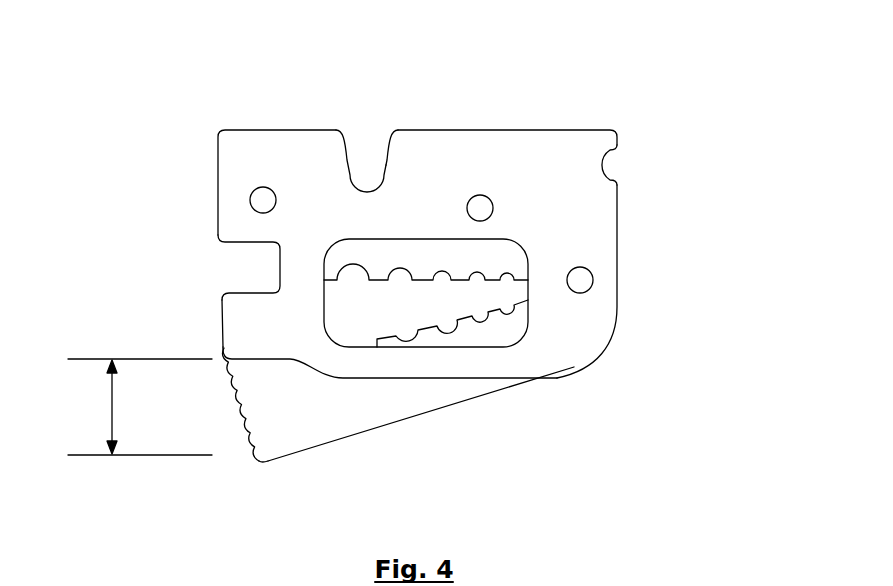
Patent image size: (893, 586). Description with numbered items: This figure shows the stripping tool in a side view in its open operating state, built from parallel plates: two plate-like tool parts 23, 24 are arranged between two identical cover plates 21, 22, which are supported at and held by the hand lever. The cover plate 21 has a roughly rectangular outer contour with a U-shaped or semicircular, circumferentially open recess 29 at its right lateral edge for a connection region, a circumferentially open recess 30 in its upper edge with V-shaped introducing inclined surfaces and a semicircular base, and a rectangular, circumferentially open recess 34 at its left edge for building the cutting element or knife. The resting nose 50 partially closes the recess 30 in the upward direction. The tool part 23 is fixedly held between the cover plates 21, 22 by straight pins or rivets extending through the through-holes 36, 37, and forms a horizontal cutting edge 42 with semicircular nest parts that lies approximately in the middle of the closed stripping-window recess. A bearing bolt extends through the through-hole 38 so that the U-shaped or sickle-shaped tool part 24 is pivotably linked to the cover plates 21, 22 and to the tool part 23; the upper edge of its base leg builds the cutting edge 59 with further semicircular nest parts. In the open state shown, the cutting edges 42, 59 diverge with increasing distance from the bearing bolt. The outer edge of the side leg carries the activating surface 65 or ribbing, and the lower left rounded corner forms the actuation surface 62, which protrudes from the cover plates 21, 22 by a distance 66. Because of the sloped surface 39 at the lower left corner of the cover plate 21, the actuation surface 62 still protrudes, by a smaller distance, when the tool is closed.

The cover plate 21 is at (416, 270).
The cover plate 22 is at (529, 158).
The tool part 23 is at (401, 246).
The tool part 24 is at (393, 420).
The recess 29 is at (592, 163).
The recess 30 is at (370, 148).
The recess 34 is at (241, 268).
The through-hole 36 is at (262, 203).
The through-hole 37 is at (479, 208).
The through-hole 38 is at (583, 280).
The sloped surface 39 is at (280, 360).
The cutting edge 42 is at (379, 293).
The resting nose 50 is at (387, 162).
The cutting edge 59 is at (420, 312).
The actuation surface 62 is at (260, 463).
The activating surface 65 is at (243, 420).
The distance 66 is at (140, 407).